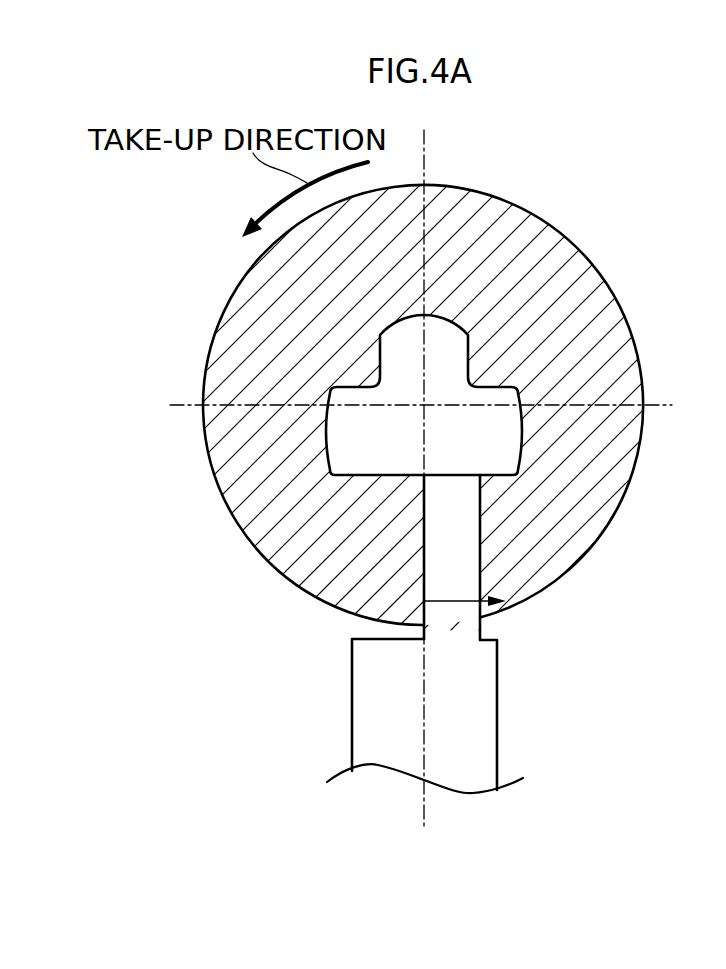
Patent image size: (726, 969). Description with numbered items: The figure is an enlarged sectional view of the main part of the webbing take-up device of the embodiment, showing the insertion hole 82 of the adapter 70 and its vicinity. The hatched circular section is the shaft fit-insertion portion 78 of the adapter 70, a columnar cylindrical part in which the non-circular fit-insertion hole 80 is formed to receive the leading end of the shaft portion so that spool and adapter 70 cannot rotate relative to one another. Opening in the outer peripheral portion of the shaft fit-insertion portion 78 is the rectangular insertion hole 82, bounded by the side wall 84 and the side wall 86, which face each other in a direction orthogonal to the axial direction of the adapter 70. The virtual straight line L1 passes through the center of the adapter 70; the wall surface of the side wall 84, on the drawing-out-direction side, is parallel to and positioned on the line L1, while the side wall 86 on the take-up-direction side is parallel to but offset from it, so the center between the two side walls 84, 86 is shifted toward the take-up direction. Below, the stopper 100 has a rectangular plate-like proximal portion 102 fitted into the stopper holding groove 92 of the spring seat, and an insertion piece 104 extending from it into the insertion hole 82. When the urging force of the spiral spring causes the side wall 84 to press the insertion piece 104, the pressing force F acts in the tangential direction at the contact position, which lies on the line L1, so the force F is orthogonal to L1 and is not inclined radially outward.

The shaft fit-insertion portion 78 is at (363, 405).
The adapter 70 is at (591, 543).
The fit-insertion hole 80 is at (468, 366).
The insertion hole 82 is at (471, 516).
The side wall 84 is at (424, 503).
The side wall 86 is at (478, 501).
The stopper holding groove 92 is at (353, 733).
The stopper 100 is at (449, 650).
The proximal portion 102 is at (487, 683).
The insertion piece 104 is at (437, 523).
The virtual straight line L1 is at (424, 152).
The pressing force F is at (424, 601).